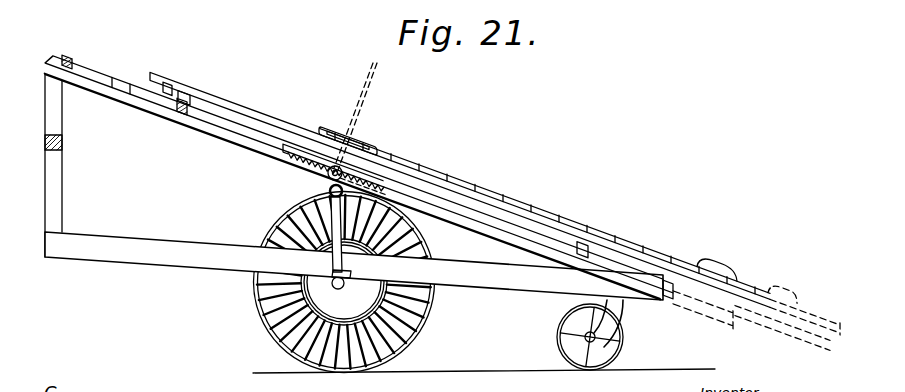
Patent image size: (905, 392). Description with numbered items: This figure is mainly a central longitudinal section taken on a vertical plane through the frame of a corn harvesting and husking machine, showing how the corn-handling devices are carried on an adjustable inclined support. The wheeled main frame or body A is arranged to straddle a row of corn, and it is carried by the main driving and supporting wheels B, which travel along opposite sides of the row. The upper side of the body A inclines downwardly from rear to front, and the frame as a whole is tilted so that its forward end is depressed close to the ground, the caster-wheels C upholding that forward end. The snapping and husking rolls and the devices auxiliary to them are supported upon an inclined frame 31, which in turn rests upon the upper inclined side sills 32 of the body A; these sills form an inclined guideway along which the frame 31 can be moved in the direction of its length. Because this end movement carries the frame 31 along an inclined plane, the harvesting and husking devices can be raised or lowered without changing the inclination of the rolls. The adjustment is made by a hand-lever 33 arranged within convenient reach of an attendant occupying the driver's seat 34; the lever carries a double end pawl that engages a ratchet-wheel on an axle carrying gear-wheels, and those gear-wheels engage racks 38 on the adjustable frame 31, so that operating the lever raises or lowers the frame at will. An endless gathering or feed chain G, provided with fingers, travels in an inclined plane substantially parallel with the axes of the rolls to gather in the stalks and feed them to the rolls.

The main frame or body A is at (354, 187).
The main driving and supporting wheels B is at (329, 282).
The caster-wheels C is at (580, 335).
The endless gathering or feed chain G is at (495, 204).
The inclined frame 31 is at (252, 131).
The upper inclined side sills 32 is at (231, 143).
The hand-lever 33 is at (376, 65).
The driver's seat 34 is at (329, 178).
The racks 38 is at (284, 154).